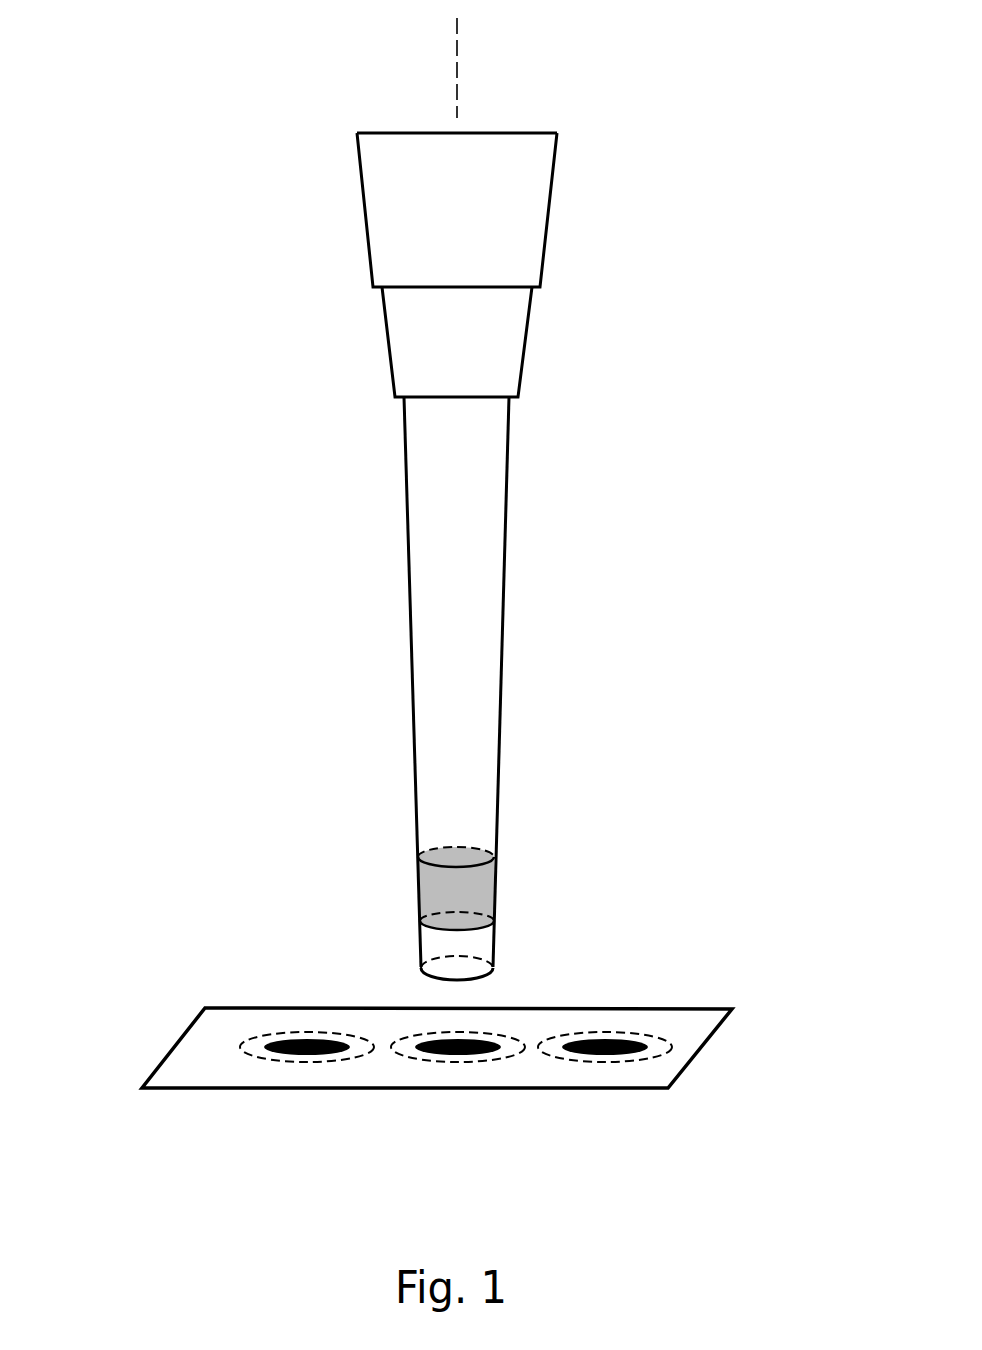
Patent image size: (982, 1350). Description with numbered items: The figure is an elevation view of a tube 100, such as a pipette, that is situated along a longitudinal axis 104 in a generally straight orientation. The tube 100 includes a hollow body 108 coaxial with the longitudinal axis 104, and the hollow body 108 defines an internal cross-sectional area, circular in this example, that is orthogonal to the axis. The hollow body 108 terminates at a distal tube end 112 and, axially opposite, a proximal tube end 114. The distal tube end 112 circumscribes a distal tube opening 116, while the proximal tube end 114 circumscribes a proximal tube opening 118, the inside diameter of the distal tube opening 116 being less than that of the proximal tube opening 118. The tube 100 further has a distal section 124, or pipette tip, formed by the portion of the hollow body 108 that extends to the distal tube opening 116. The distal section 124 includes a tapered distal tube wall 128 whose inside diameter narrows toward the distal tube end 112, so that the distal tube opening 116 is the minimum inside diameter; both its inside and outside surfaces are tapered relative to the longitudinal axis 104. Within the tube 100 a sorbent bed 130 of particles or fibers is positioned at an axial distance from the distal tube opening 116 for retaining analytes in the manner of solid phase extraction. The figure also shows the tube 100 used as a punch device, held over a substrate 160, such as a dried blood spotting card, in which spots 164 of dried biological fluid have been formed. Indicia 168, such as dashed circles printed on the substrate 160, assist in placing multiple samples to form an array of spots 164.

The tube 100 is at (146, 263).
The longitudinal axis 104 is at (457, 68).
The hollow body 108 is at (402, 472).
The distal tube end 112 is at (519, 977).
The proximal tube end 114 is at (565, 124).
The distal tube opening 116 is at (493, 972).
The proximal tube opening 118 is at (377, 131).
The distal section 124 is at (375, 848).
The tapered distal tube wall 128 is at (420, 952).
The sorbent bed 130 is at (495, 870).
The substrate 160 is at (717, 1037).
The spots 164 is at (582, 1057).
The indicia 168 is at (407, 1037).